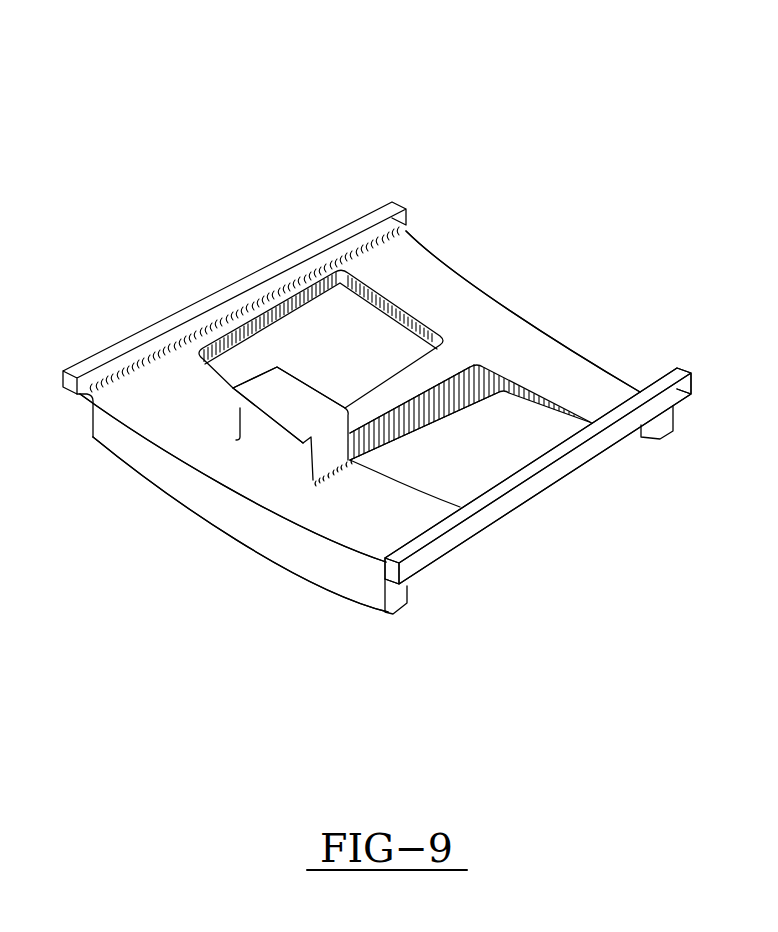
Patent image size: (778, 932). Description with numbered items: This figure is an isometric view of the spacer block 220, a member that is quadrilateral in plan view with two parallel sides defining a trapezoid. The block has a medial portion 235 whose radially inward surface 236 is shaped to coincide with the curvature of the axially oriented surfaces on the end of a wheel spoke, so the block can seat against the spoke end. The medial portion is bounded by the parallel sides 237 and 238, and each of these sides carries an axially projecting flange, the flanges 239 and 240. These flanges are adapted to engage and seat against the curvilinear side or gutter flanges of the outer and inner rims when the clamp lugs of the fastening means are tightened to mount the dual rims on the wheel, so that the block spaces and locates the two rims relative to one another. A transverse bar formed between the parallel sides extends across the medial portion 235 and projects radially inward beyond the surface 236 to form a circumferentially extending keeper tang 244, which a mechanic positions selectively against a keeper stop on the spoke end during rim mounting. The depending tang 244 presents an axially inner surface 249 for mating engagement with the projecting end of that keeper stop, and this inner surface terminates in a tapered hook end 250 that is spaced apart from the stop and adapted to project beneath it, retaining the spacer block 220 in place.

The spacer block 220 is at (278, 128).
The medial portion 235 is at (462, 540).
The radially inward surface 236 is at (390, 521).
The parallel side 237 is at (313, 560).
The parallel side 238 is at (540, 335).
The axially projecting flange 239 is at (87, 394).
The axially projecting flange 240 is at (395, 200).
The keeper tang 244 is at (332, 432).
The axially inner surface 249 is at (287, 447).
The tapered hook end 250 is at (267, 410).